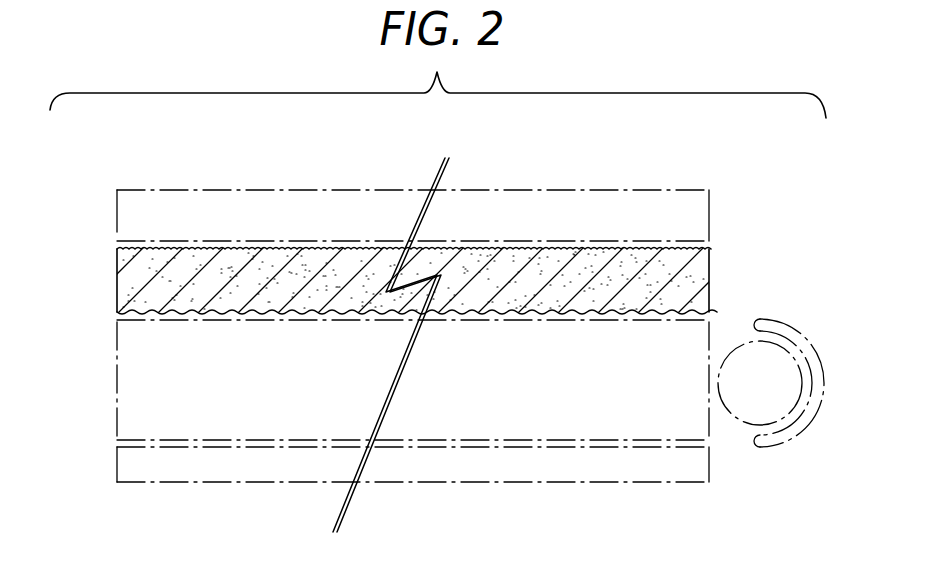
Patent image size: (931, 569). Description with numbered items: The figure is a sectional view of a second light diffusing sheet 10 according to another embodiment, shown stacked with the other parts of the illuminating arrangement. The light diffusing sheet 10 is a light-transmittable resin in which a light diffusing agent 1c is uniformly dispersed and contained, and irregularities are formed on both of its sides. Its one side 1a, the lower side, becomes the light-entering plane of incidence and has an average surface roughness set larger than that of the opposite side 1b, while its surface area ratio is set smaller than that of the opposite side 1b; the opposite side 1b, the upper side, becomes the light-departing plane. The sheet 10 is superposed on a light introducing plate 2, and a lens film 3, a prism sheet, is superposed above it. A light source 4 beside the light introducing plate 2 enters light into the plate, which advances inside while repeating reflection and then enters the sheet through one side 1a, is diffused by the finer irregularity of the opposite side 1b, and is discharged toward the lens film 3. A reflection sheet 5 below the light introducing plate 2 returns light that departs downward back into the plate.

The lens film 3 is at (117, 214).
The light diffusing sheet 10 is at (117, 283).
The light introducing plate 2 is at (117, 381).
The reflection sheet 5 is at (117, 464).
The one side 1a is at (532, 328).
The opposite side 1b is at (520, 249).
The light diffusing agent 1c is at (625, 268).
The light source 4 is at (741, 346).